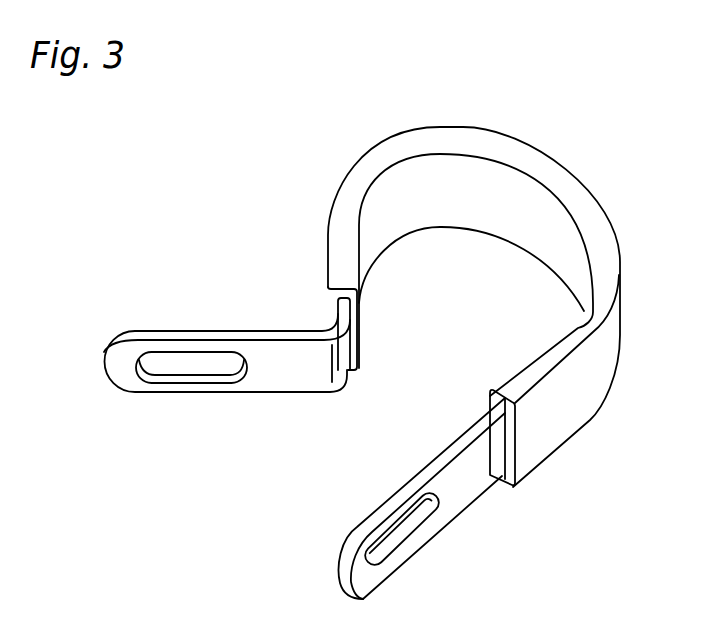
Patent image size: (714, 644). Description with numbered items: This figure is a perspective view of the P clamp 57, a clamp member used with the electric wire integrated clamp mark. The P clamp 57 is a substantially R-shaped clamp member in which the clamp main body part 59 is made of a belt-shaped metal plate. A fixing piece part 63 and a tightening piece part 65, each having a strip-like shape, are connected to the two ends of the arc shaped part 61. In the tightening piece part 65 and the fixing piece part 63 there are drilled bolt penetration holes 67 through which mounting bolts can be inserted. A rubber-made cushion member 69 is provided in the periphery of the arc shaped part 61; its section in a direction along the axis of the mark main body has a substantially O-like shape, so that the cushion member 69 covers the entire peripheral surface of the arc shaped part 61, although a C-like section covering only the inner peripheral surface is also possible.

The P clamp 57 is at (352, 143).
The clamp main body part 59 is at (338, 550).
The arc shaped part 61 is at (605, 199).
The fixing piece part 63 is at (477, 424).
The tightening piece part 65 is at (269, 337).
The bolt penetration hole 67 is at (202, 378).
The cushion member 69 is at (447, 200).